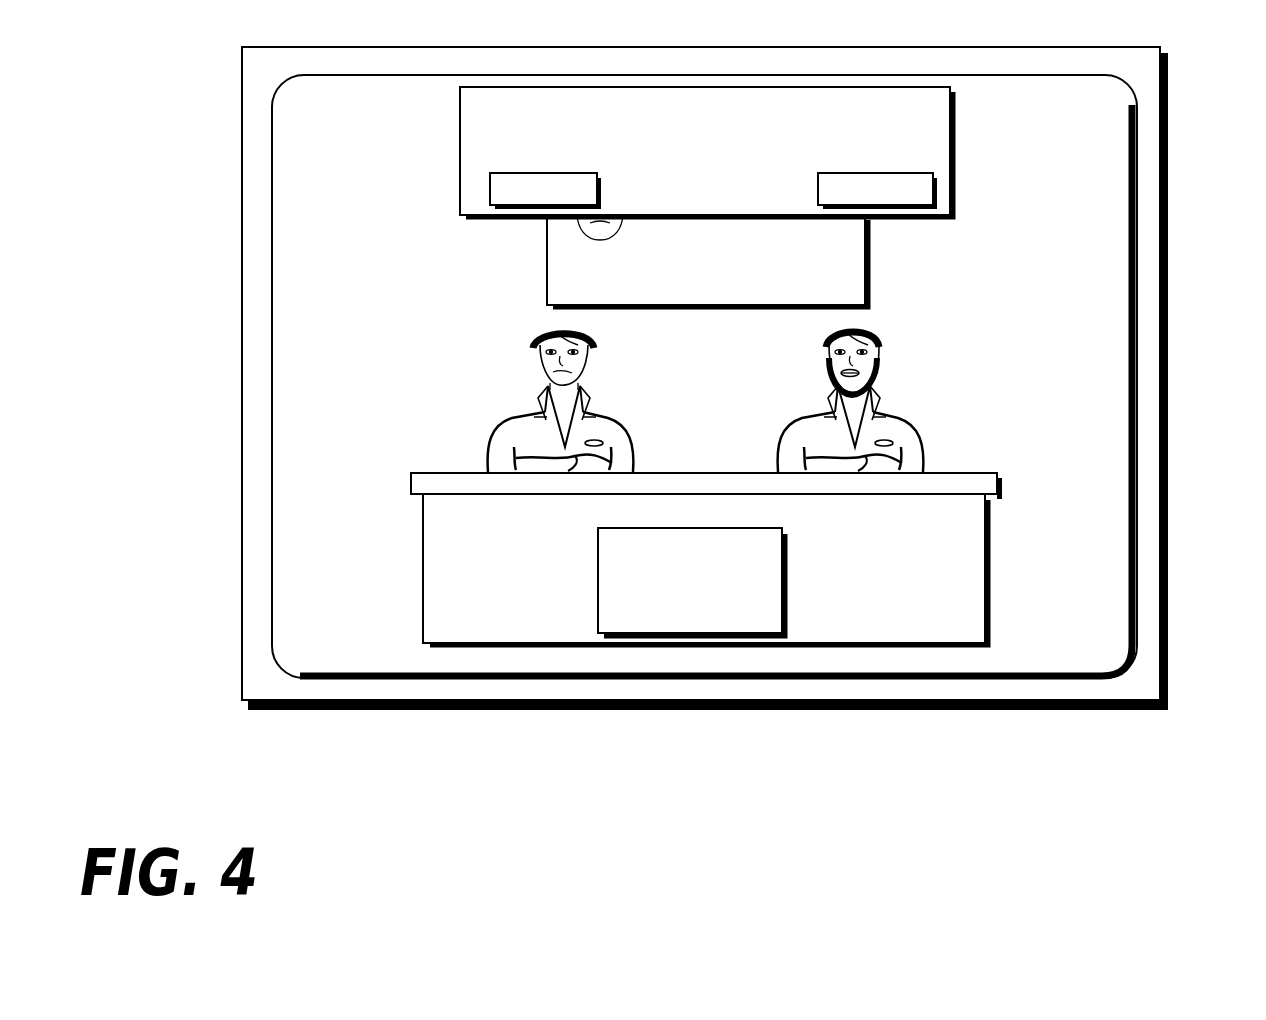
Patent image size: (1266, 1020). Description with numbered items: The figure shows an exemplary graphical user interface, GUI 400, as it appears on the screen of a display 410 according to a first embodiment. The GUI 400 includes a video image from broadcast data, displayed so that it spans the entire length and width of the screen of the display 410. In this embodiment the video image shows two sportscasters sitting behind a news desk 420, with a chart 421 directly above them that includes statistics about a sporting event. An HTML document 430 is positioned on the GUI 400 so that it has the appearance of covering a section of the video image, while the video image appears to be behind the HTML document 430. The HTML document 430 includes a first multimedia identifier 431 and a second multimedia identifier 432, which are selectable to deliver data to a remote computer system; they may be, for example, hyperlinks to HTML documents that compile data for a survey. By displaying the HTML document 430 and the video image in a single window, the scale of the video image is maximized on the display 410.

The graphical user interface 400 is at (1027, 680).
The display 410 is at (1152, 111).
The news desk 420 is at (975, 408).
The chart 421 is at (865, 285).
The HTML document 430 is at (950, 122).
The first multimedia identifier 431 is at (490, 190).
The second multimedia identifier 432 is at (933, 193).